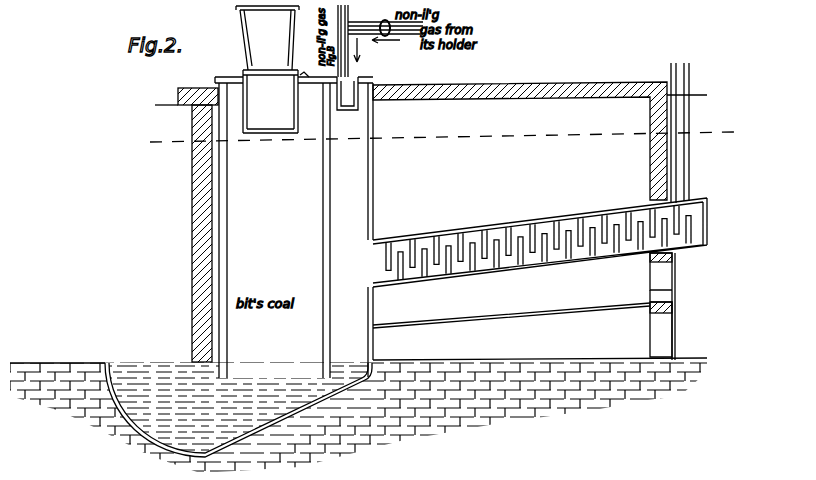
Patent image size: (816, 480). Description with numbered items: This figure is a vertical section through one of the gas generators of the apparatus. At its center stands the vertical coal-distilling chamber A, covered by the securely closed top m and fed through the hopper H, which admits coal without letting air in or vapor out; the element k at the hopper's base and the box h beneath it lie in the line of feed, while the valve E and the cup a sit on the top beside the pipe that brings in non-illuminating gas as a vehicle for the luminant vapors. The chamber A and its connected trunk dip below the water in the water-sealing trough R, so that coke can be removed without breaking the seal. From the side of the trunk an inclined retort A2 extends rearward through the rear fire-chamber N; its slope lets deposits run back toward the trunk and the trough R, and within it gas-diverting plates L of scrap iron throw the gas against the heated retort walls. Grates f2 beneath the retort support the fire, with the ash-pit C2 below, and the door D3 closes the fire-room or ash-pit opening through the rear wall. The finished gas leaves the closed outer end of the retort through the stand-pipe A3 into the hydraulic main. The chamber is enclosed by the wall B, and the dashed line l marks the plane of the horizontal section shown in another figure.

The vertical coal-distilling chamber A is at (294, 227).
The inclined retort A2 is at (540, 242).
The stand-pipe A3 is at (689, 133).
The brick wall B is at (186, 225).
The rear fire-chamber N is at (520, 141).
The hopper H is at (267, 38).
The hopper valve bar k is at (270, 67).
The feed box h is at (270, 101).
The top m is at (307, 76).
The valve E is at (313, 95).
The seal cup a is at (347, 93).
The section line l is at (440, 143).
The gas-diverting plate L is at (538, 243).
The grates f2 is at (511, 314).
The ash-pit C2 is at (536, 347).
The door D3 is at (673, 306).
The water-sealing trough R is at (238, 410).